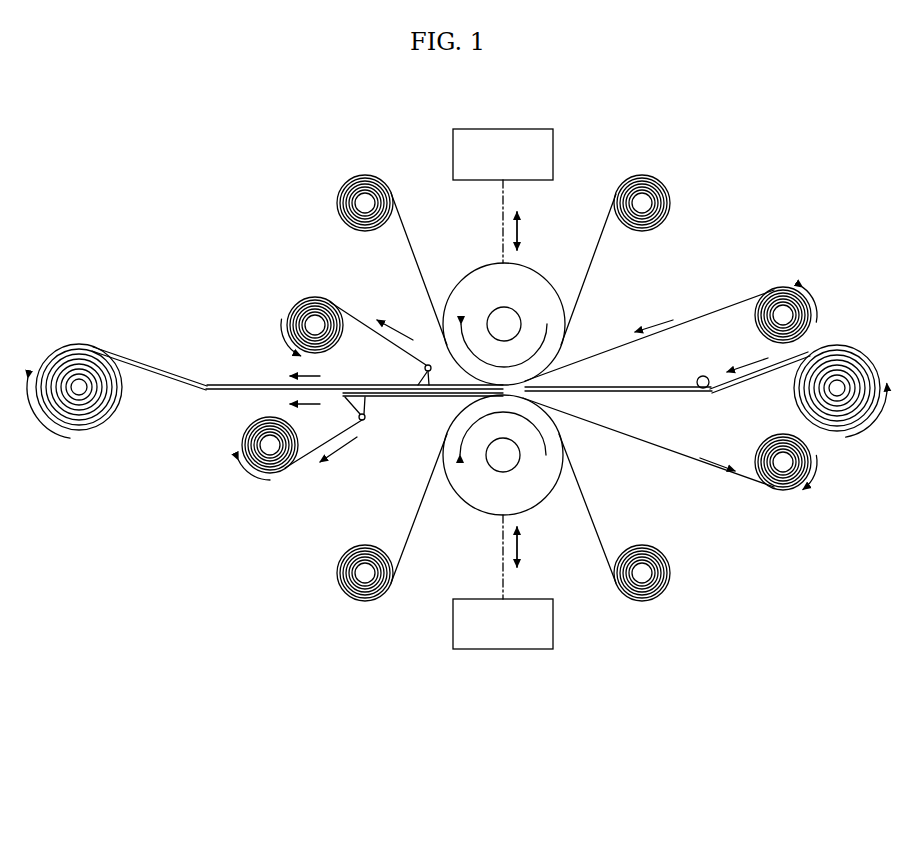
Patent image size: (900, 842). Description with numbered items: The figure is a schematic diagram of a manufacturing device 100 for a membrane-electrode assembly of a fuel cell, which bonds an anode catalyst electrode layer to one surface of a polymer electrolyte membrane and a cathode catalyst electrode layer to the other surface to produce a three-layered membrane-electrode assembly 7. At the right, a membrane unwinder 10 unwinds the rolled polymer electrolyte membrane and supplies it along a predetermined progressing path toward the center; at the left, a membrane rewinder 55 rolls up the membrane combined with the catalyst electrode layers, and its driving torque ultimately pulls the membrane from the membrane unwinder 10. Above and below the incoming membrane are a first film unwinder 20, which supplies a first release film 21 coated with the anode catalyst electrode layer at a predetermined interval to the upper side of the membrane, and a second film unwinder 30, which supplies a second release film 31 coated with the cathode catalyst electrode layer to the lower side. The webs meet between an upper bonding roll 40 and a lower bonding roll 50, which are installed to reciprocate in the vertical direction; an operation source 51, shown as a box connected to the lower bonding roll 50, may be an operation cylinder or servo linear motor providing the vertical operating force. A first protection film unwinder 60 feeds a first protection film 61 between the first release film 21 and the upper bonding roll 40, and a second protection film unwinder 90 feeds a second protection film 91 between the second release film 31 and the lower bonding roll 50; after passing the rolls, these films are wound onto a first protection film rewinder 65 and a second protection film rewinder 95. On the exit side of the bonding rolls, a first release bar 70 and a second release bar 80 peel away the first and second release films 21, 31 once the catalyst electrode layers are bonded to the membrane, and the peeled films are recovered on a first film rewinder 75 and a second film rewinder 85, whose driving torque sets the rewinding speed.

The manufacturing device 100 is at (483, 108).
The membrane unwinder 10 is at (838, 386).
The membrane-electrode assembly 7 is at (227, 379).
The first film unwinder 20 is at (782, 313).
The first release film 21 is at (695, 322).
The second film unwinder 30 is at (782, 467).
The second release film 31 is at (689, 462).
The upper bonding roll 40 is at (536, 280).
The lower bonding roll 50 is at (487, 513).
The operation source 51 is at (503, 650).
The membrane rewinder 55 is at (78, 386).
The first protection film unwinder 60 is at (642, 198).
The first protection film 61 is at (413, 245).
The first protection film rewinder 65 is at (364, 198).
The first release bar 70 is at (418, 381).
The first film rewinder 75 is at (313, 320).
The second release bar 80 is at (367, 405).
The second film rewinder 85 is at (262, 445).
The second protection film unwinder 90 is at (642, 577).
The second protection film 91 is at (412, 520).
The second protection film rewinder 95 is at (365, 577).